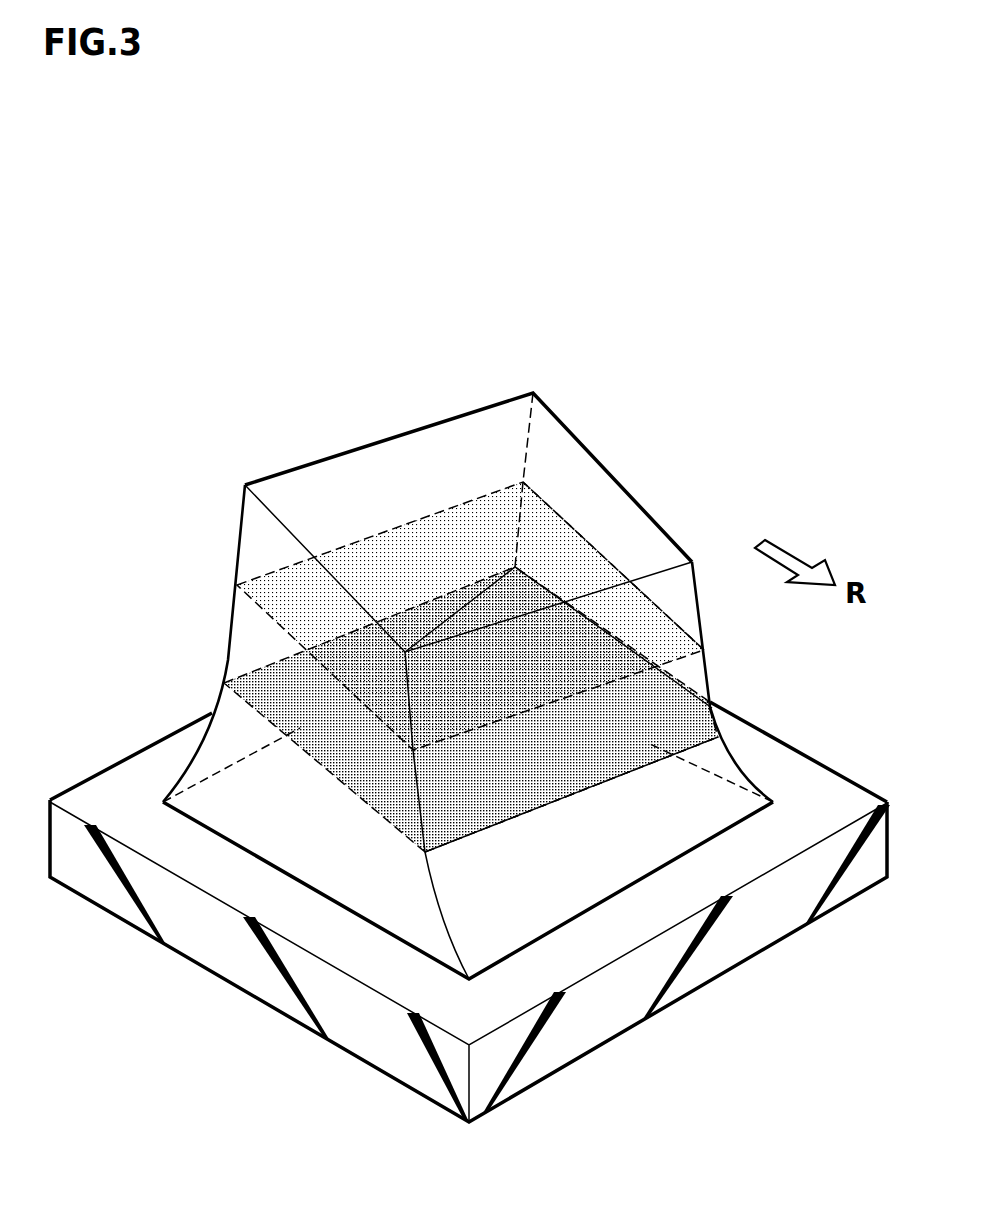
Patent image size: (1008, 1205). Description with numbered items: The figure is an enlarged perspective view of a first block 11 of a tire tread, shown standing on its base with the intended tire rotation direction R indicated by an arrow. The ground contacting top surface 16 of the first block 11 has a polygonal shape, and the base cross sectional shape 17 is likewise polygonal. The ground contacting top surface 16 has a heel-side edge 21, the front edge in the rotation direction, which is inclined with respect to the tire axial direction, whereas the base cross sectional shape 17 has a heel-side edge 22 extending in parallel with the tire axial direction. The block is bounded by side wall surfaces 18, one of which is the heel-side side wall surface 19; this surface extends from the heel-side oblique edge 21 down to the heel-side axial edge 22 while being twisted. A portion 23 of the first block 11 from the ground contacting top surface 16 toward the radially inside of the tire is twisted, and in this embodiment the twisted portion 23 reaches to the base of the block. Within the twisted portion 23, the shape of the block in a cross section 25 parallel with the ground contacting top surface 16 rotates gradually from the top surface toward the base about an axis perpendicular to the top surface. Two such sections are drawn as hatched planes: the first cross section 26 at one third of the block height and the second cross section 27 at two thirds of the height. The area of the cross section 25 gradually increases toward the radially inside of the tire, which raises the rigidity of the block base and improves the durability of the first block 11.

The first block 11 is at (494, 738).
The ground contacting top surface 16 is at (391, 478).
The base cross sectional shape 17 is at (290, 748).
The side wall surfaces 18 is at (567, 812).
The heel-side side wall surface 19 is at (567, 812).
The heel-side edge 21 is at (598, 587).
The heel-side edge 22 is at (700, 848).
The twisted portion 23 is at (323, 825).
The cross section 25 is at (380, 657).
The first cross section 26 is at (232, 803).
The second cross section 27 is at (300, 560).